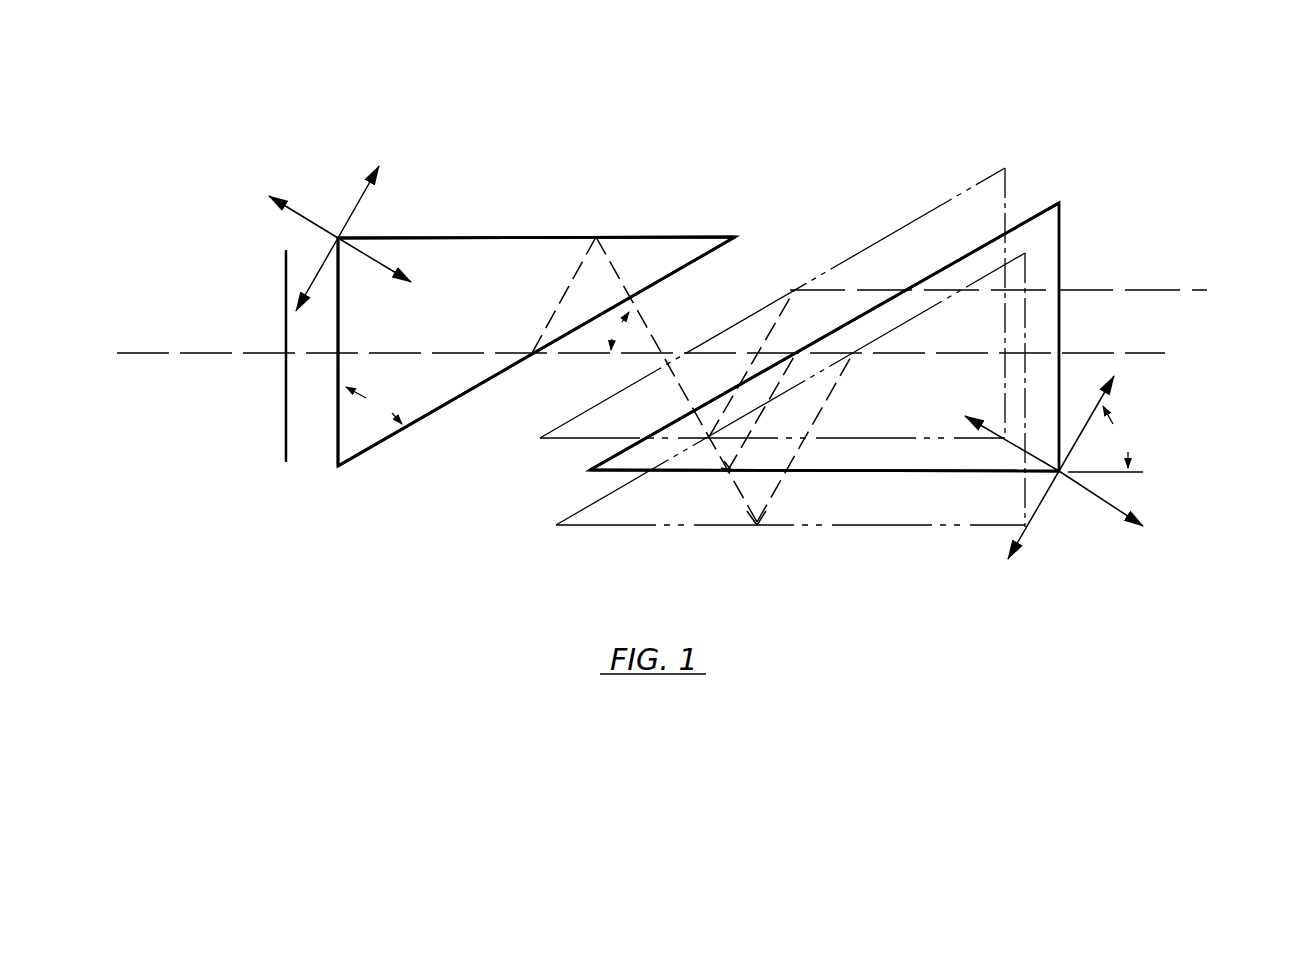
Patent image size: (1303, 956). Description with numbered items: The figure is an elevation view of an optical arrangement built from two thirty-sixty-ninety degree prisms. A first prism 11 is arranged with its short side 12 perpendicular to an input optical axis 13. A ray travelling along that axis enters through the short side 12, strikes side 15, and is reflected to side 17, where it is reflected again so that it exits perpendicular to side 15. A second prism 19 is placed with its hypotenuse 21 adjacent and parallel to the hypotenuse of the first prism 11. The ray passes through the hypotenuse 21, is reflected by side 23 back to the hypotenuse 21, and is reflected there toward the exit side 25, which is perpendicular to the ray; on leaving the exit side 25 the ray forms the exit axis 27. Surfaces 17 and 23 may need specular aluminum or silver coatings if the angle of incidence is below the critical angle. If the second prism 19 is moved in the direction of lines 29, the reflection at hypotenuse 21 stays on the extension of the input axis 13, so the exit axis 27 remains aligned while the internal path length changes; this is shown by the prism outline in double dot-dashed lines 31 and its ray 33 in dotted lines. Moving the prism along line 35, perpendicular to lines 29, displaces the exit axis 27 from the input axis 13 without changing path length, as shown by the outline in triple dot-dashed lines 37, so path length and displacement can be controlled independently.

The first 30°-60°-90° prism 11 is at (536, 324).
The short side 12 is at (339, 338).
The input optical axis 13 is at (186, 353).
The side 15 is at (463, 393).
The side 17 is at (528, 240).
The second 30°-60°-90° prism 19 is at (866, 311).
The hypotenuse 21 is at (873, 312).
The side 23 is at (878, 471).
The exit side 25 is at (1053, 265).
The exit axis 27 is at (1128, 354).
The lines 29 is at (364, 174).
The double dot-dashed lines 31 is at (906, 525).
The ray 33 is at (834, 386).
The line 35 is at (280, 199).
The triple dot-dashed lines 37 is at (880, 237).